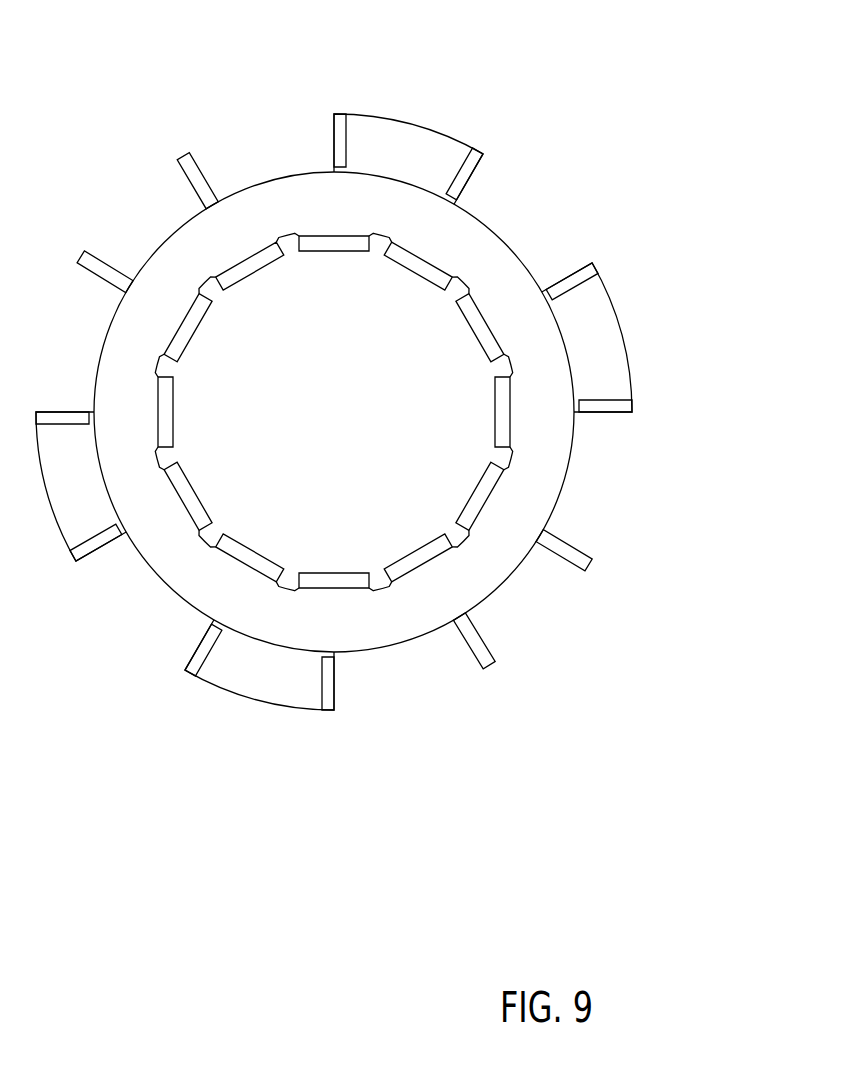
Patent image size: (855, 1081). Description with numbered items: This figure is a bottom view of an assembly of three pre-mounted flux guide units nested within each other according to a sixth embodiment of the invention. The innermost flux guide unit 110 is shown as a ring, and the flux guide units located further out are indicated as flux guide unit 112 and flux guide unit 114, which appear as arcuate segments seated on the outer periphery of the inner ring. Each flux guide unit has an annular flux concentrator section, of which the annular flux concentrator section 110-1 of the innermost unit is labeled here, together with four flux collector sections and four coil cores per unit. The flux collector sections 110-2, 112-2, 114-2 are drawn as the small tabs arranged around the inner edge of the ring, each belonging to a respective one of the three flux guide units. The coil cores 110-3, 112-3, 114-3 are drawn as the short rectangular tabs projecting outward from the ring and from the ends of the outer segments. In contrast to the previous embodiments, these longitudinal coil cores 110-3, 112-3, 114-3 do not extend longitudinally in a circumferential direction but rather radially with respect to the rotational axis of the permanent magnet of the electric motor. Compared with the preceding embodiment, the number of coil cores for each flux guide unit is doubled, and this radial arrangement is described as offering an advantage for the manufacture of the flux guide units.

The innermost flux guide unit 110 is at (518, 213).
The annular flux concentrator section 110-1 is at (552, 463).
The flux collector section 110-2 is at (500, 430).
The coil core 110-3 is at (553, 540).
The flux guide unit 112 is at (420, 118).
The flux collector section 112-2 is at (483, 330).
The coil core 112-3 is at (338, 137).
The flux guide unit 114 is at (645, 327).
The flux collector section 114-2 is at (403, 265).
The coil core 114-3 is at (573, 277).